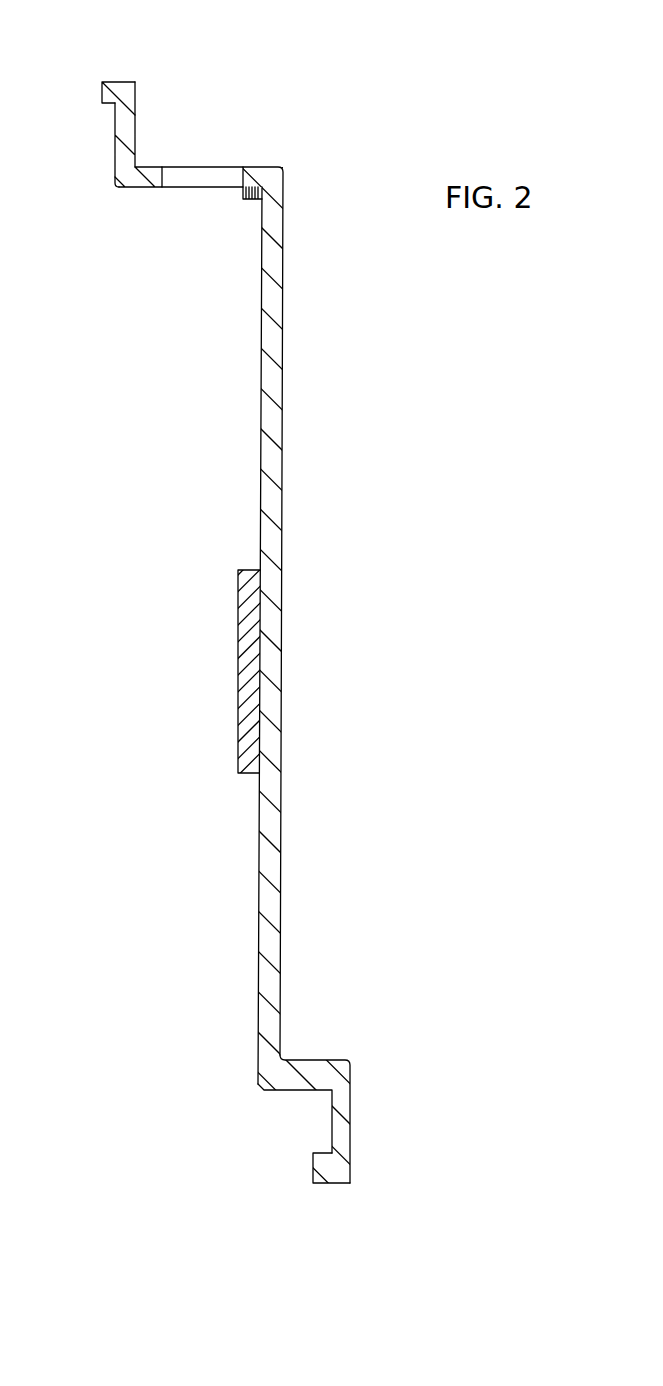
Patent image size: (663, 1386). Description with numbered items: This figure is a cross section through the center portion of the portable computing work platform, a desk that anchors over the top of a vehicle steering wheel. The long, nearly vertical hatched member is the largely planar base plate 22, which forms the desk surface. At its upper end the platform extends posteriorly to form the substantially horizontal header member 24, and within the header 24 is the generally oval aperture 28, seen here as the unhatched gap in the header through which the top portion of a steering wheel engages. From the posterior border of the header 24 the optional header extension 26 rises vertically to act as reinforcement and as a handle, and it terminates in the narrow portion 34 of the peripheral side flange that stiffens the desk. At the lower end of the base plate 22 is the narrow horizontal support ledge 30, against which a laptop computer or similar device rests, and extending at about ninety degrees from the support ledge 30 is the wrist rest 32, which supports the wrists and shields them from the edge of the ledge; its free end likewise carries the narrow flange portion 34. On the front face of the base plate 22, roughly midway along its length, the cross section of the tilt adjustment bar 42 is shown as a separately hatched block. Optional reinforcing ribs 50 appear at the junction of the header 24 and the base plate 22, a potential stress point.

The base plate 22 is at (283, 543).
The header member 24 is at (143, 188).
The header extension 26 is at (115, 140).
The oval aperture 28 is at (202, 173).
The support ledge 30 is at (305, 1090).
The wrist rest 32 is at (350, 1113).
The narrow portion of side flange 34 is at (322, 1182).
The tilt adjustment bar 42 is at (238, 603).
The reinforcing ribs 50 is at (253, 200).